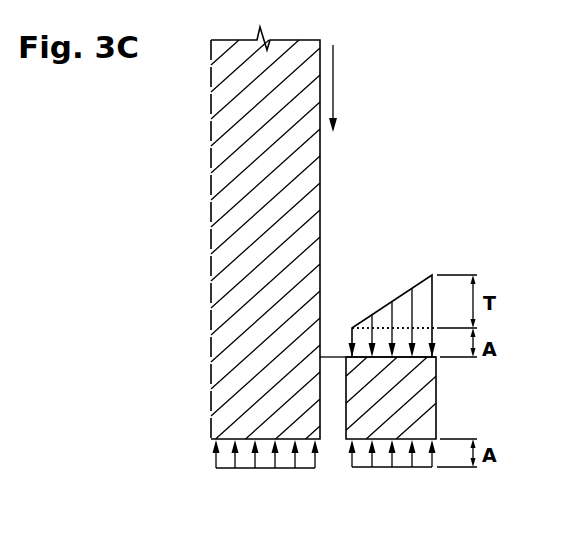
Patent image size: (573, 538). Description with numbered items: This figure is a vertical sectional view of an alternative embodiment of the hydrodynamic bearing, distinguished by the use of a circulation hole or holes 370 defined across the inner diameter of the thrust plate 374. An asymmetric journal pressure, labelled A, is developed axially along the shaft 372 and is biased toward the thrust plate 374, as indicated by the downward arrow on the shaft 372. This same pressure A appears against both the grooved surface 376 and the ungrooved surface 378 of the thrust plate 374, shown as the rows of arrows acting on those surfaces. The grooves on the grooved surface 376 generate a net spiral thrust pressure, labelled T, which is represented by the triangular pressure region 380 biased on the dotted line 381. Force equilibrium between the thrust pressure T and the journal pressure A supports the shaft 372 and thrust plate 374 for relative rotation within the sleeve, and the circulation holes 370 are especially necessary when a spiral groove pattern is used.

The circulation hole 370 is at (333, 446).
The shaft 372 is at (230, 118).
The thrust plate 374 is at (427, 420).
The grooved surface 376 is at (362, 358).
The ungrooved surface 378 is at (380, 443).
The applied pressure profile 380 is at (382, 313).
The dotted line 381 is at (421, 323).